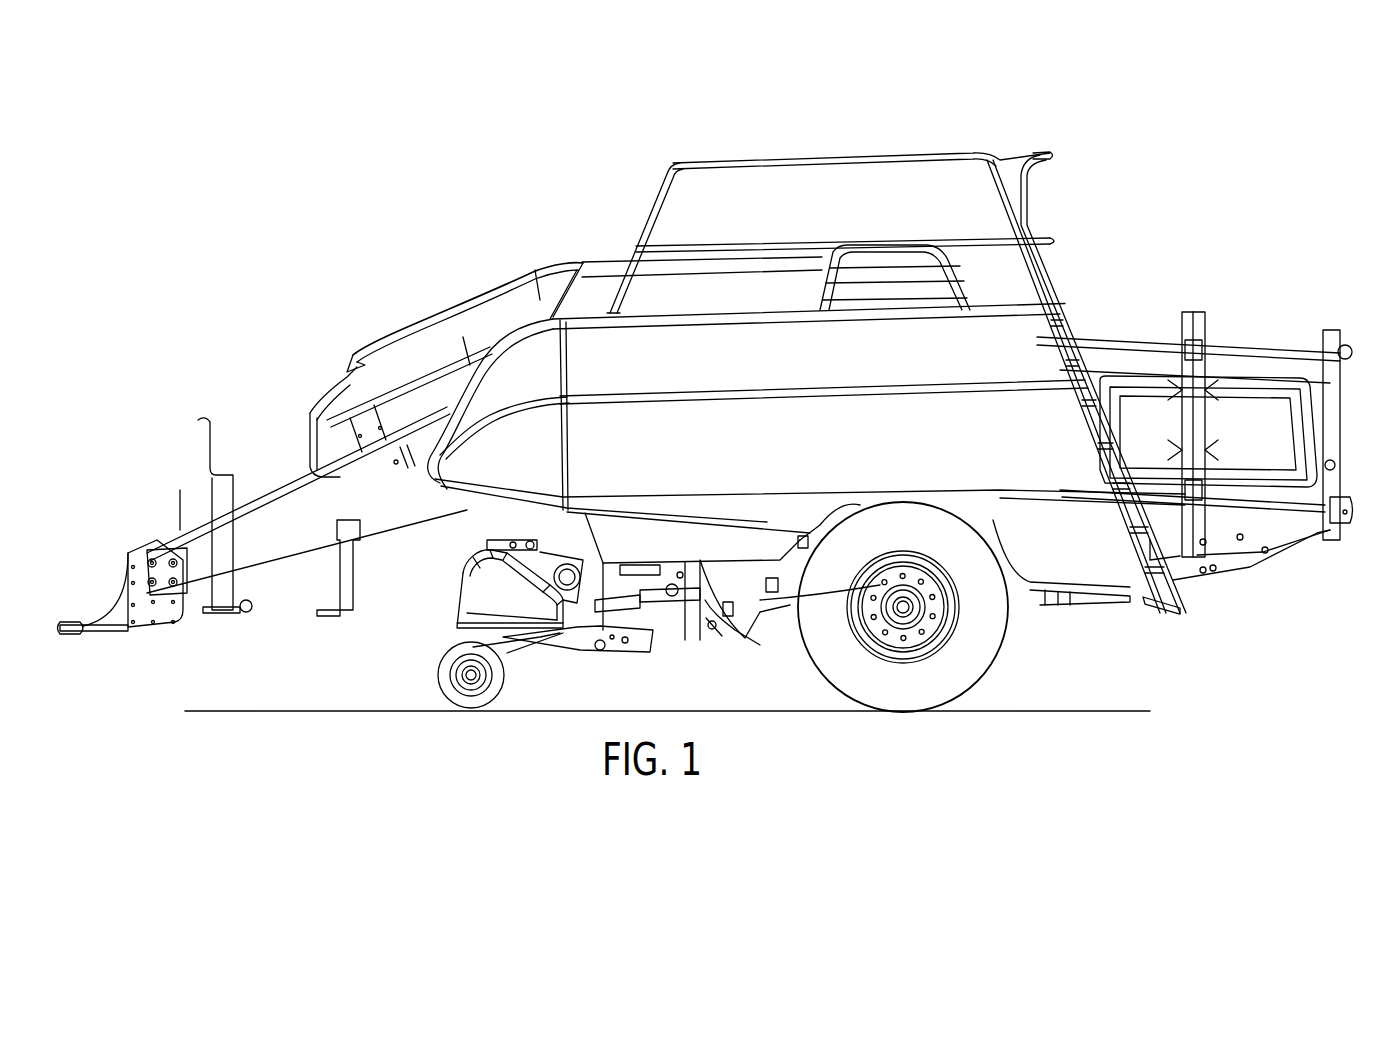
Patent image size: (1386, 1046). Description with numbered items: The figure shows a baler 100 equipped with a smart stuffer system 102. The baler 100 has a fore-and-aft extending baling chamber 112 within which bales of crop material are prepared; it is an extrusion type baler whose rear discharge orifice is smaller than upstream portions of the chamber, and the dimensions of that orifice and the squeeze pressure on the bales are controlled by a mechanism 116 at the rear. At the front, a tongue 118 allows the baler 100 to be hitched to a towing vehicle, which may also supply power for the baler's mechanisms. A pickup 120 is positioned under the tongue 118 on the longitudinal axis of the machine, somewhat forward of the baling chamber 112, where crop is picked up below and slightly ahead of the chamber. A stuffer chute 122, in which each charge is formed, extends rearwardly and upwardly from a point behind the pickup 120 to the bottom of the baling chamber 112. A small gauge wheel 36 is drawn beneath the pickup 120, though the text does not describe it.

The baler 100 is at (1093, 193).
The baling chamber 112 is at (1121, 387).
The discharge orifice control mechanism 116 is at (1190, 442).
The tongue 118 is at (305, 497).
The pickup 120 is at (405, 680).
The pickup gauge wheel 36 is at (478, 703).
The smart stuffer system 102 is at (718, 633).
The stuffer chute 122 is at (723, 620).